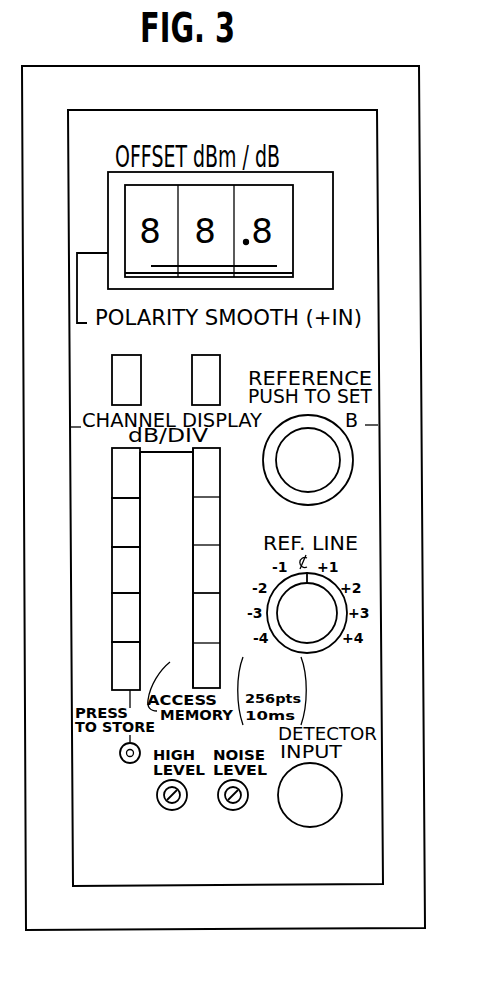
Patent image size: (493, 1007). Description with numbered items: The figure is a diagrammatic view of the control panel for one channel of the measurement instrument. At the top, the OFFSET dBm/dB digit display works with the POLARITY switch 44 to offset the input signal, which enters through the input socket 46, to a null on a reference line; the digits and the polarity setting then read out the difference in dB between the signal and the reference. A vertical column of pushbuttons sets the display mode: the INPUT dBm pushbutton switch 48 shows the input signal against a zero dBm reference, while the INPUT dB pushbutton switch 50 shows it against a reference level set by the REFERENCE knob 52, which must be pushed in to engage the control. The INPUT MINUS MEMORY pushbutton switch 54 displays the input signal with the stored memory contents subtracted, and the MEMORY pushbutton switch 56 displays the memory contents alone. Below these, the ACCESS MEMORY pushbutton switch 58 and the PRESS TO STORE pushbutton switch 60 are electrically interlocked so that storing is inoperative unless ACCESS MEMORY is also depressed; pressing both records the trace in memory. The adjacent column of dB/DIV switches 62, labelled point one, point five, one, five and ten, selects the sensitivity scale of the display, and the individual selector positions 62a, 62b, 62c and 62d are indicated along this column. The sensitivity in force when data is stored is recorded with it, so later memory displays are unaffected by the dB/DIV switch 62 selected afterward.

The POLARITY switch 44 is at (133, 380).
The input socket 46 is at (332, 795).
The INPUT dBm pushbutton switch 48 is at (123, 478).
The INPUT dB pushbutton switch 50 is at (120, 522).
The REFERENCE knob 52 is at (328, 470).
The INPUT MINUS MEMORY pushbutton switch 54 is at (123, 575).
The MEMORY pushbutton switch 56 is at (118, 623).
The ACCESS MEMORY pushbutton switch 58 is at (117, 682).
The PRESS TO STORE pushbutton switch 60 is at (120, 757).
The dB/DIV switches 62 is at (242, 560).
The dB/DIV selector position 62a is at (142, 452).
The dB/DIV selector position 62b is at (198, 556).
The dB/DIV selector position 62c is at (200, 648).
The dB/DIV selector position 62d is at (207, 628).